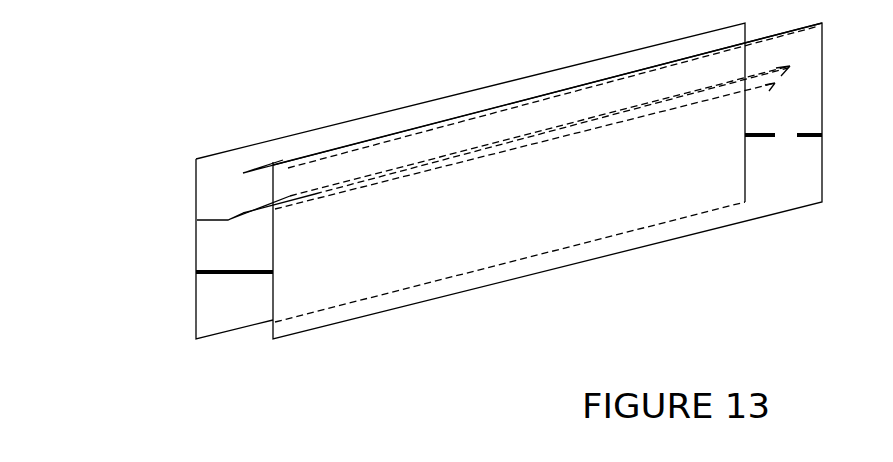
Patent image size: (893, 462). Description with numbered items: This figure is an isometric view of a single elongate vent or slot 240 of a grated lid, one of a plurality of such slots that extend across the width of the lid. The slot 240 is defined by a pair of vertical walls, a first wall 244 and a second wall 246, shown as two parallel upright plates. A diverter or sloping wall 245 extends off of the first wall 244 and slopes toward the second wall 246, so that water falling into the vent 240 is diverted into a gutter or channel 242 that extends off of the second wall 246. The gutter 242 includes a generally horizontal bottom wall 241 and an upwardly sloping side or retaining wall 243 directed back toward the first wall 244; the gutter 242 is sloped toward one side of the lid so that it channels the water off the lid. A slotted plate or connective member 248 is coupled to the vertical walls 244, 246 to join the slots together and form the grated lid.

The elongate vent or slot 240 is at (238, 349).
The horizontal bottom wall 241 is at (212, 220).
The gutter or channel 242 is at (229, 204).
The upwardly sloping retaining wall 243 is at (247, 212).
The first vertical wall 244 is at (275, 288).
The diverter or sloping wall 245 is at (260, 167).
The second vertical wall 246 is at (197, 186).
The slotted plate or connective member 248 is at (222, 273).